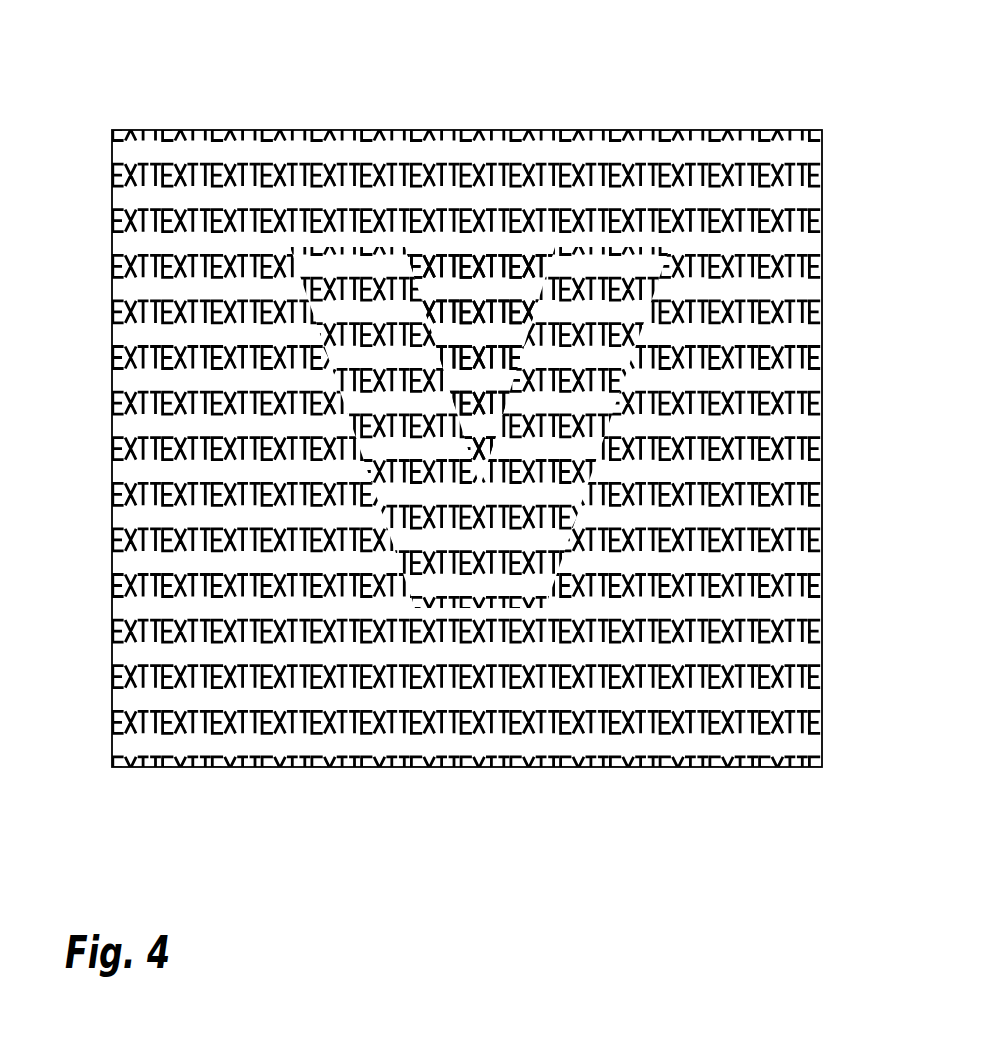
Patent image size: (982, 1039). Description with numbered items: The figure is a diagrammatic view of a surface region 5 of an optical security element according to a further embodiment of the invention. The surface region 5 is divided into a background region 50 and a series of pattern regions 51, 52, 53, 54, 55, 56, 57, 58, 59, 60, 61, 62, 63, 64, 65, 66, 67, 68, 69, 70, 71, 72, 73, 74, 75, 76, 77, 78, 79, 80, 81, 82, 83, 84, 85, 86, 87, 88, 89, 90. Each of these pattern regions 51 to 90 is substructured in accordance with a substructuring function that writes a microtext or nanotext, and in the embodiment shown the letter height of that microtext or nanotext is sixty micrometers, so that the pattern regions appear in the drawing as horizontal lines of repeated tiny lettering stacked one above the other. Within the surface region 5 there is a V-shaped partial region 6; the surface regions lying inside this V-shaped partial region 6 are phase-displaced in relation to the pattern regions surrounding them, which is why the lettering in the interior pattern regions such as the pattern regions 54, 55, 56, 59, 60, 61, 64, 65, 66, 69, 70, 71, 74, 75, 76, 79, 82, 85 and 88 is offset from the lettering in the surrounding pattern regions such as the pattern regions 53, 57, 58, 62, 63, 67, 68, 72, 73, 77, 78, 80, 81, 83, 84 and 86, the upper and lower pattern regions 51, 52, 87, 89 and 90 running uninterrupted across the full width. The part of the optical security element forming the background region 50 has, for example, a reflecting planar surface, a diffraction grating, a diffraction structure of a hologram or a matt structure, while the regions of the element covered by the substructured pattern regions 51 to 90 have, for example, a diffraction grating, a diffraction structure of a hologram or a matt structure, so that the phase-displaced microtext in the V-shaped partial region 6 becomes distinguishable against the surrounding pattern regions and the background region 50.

The surface region 5 is at (596, 130).
The V-shaped partial region 6 is at (466, 344).
The background region 50 is at (112, 152).
The pattern region 51 is at (112, 177).
The pattern region 52 is at (112, 223).
The pattern region 53 is at (112, 269).
The pattern region 54 is at (298, 254).
The pattern region 55 is at (507, 255).
The pattern region 56 is at (668, 250).
The pattern region 57 is at (823, 266).
The pattern region 58 is at (112, 314).
The pattern region 59 is at (298, 292).
The pattern region 60 is at (497, 301).
The pattern region 61 is at (658, 290).
The pattern region 62 is at (823, 311).
The pattern region 63 is at (112, 358).
The pattern region 64 is at (316, 340).
The pattern region 65 is at (498, 352).
The pattern region 66 is at (641, 338).
The pattern region 67 is at (823, 357).
The pattern region 68 is at (112, 402).
The pattern region 69 is at (334, 384).
The pattern region 70 is at (498, 396).
The pattern region 71 is at (626, 384).
The pattern region 72 is at (823, 402).
The pattern region 73 is at (112, 447).
The pattern region 74 is at (350, 427).
The pattern region 75 is at (498, 440).
The pattern region 76 is at (613, 428).
The pattern region 77 is at (823, 447).
The pattern region 78 is at (112, 492).
The pattern region 79 is at (368, 470).
The pattern region 80 is at (823, 492).
The pattern region 81 is at (112, 537).
The pattern region 82 is at (386, 515).
The pattern region 83 is at (823, 537).
The pattern region 84 is at (112, 583).
The pattern region 85 is at (406, 562).
The pattern region 86 is at (823, 583).
The pattern region 87 is at (112, 627).
The pattern region 88 is at (418, 603).
The pattern region 89 is at (112, 675).
The pattern region 90 is at (112, 722).